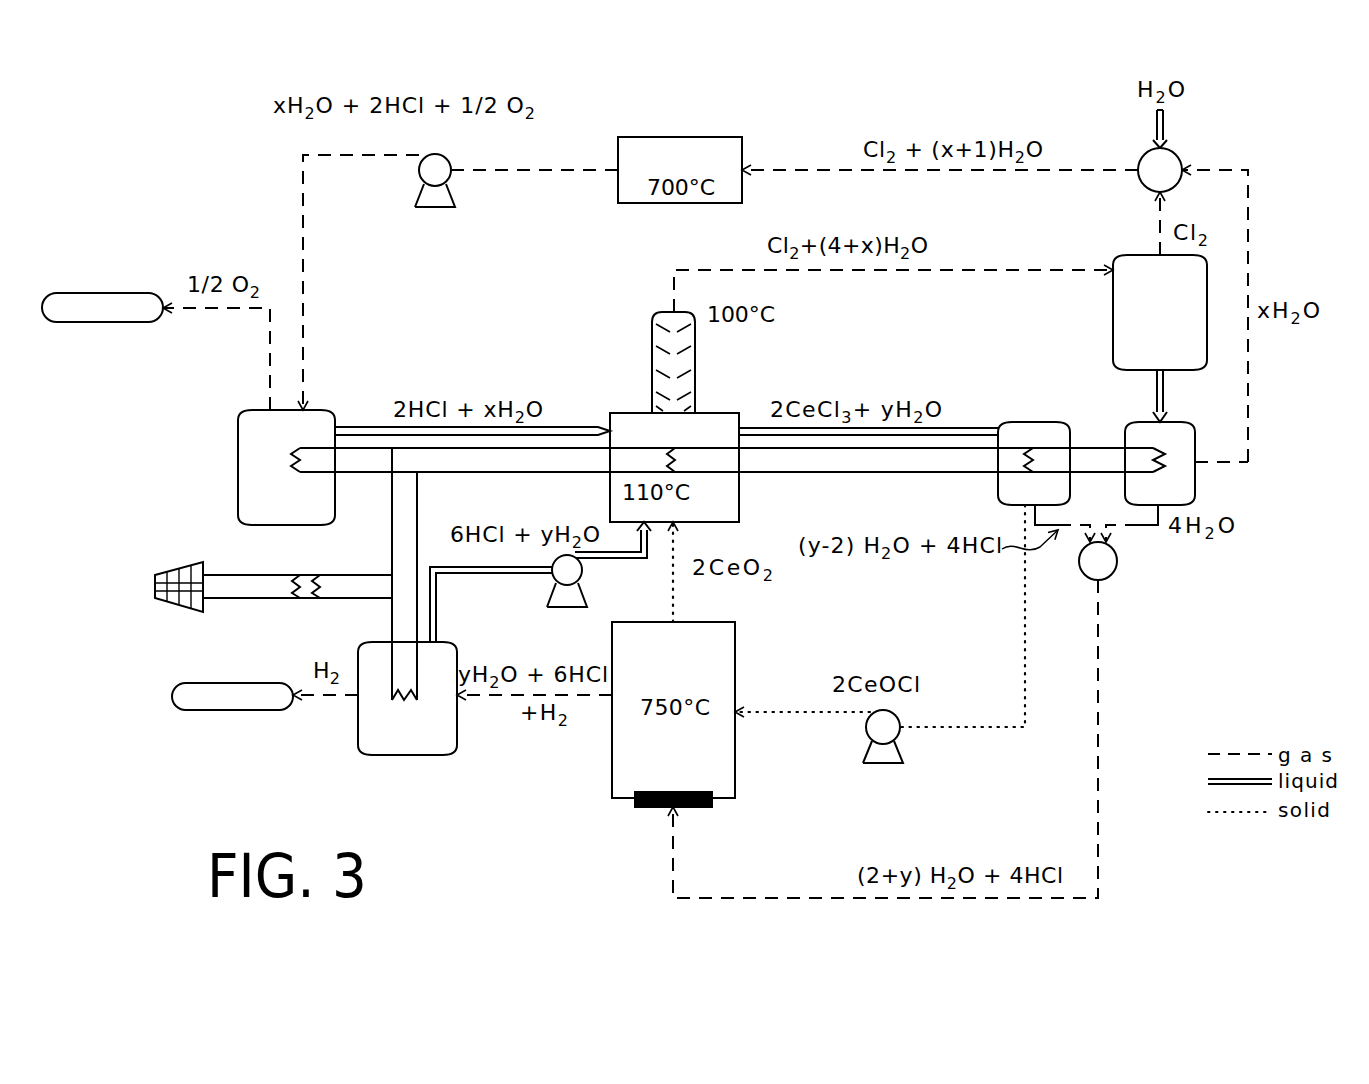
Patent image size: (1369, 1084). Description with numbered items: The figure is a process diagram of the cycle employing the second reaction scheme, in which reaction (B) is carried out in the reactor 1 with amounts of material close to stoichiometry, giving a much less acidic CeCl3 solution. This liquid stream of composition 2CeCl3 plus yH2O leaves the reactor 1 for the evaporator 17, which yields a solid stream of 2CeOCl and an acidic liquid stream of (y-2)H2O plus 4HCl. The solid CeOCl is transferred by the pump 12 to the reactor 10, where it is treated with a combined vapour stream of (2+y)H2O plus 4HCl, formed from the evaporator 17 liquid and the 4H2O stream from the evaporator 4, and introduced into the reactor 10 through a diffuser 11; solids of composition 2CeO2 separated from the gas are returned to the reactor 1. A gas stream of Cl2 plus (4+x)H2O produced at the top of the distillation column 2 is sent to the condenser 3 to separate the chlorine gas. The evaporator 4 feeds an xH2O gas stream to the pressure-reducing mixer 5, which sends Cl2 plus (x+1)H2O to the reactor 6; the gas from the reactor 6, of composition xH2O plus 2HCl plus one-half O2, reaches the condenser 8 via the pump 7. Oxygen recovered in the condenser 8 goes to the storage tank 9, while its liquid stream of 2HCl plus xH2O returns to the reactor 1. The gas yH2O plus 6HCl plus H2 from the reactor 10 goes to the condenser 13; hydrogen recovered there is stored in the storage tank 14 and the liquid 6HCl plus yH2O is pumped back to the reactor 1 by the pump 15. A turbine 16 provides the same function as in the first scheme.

The reactor 1 is at (674, 467).
The distillation column 2 is at (673, 362).
The condenser 3 is at (1160, 312).
The evaporator 4 is at (1156, 447).
The pressure-reducing mixer 5 is at (1160, 170).
The reactor 6 is at (680, 170).
The pump 7 is at (450, 171).
The condenser 8 is at (286, 467).
The storage tank 9 is at (102, 292).
The reactor 10 is at (673, 710).
The diffuser 11 is at (662, 817).
The pump 12 is at (909, 737).
The condenser 13 is at (407, 698).
The storage tank 14 is at (232, 681).
The pump 15 is at (540, 582).
The turbine 16 is at (268, 574).
The evaporator 17 is at (1034, 447).